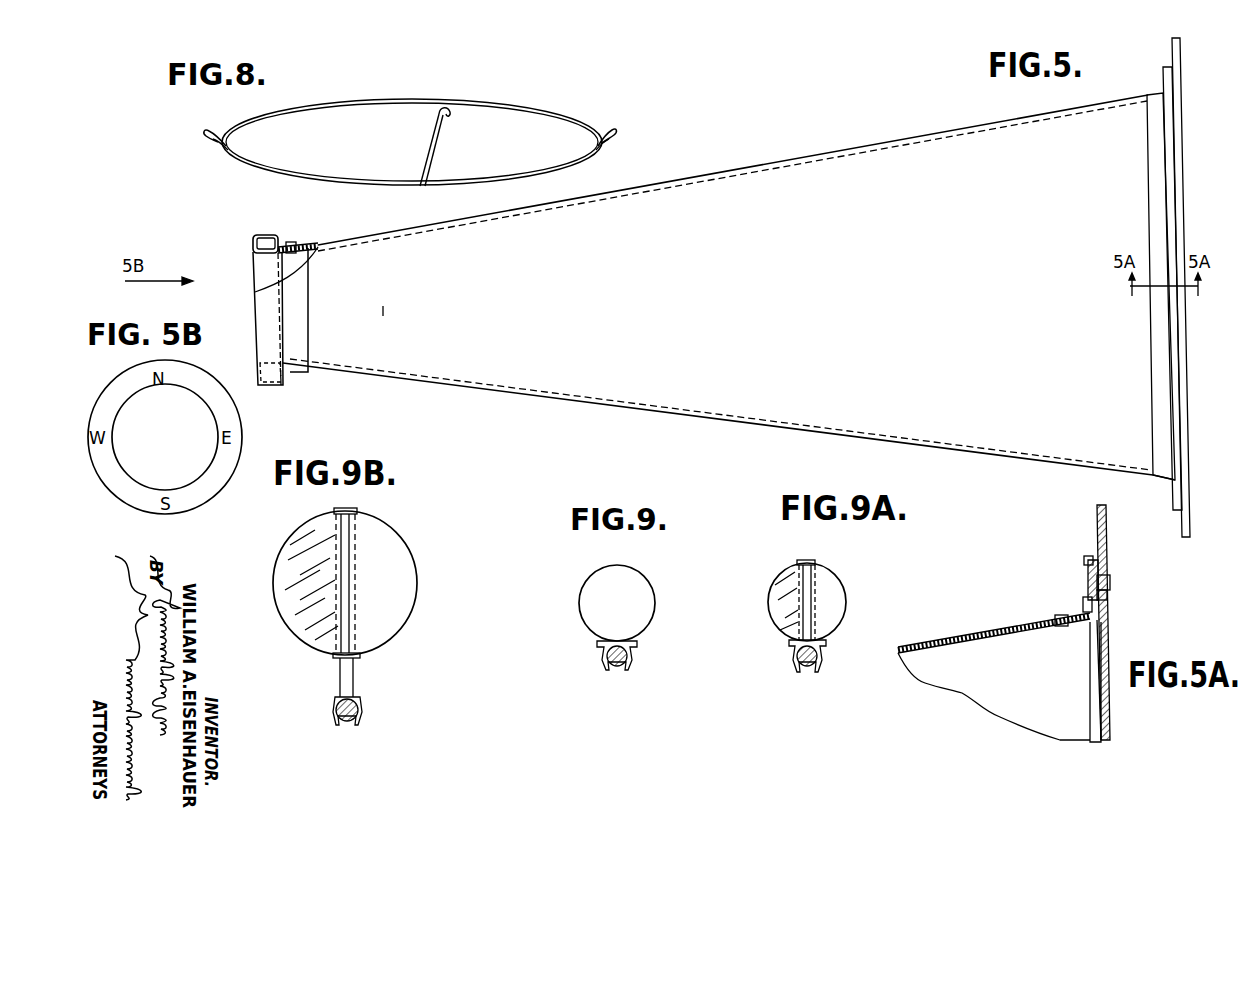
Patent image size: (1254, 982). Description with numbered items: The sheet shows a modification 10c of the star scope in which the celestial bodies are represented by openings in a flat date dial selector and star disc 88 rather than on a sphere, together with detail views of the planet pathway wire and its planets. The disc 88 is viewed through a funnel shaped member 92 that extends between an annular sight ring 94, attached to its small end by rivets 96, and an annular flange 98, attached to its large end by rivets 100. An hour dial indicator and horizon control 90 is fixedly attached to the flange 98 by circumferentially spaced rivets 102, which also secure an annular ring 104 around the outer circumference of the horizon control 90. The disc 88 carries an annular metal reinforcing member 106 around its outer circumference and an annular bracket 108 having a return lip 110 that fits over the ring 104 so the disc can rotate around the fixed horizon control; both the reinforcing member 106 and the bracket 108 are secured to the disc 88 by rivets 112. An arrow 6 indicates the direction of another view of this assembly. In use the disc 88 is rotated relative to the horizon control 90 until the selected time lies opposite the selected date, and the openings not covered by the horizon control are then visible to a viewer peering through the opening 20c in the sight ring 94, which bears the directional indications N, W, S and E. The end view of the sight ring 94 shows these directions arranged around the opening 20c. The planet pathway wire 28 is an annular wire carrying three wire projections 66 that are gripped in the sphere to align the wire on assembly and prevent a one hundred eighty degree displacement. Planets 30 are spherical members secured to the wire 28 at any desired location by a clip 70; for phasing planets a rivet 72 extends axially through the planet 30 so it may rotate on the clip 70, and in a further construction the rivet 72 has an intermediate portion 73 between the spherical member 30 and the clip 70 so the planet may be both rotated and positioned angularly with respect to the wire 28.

In FIG. 5, the viewing direction arrow 6 is at (1090, 356).
In FIG. 5, the modification of the star scope 10c is at (481, 402).
In FIG. 5, the opening in the sight ring 20c is at (258, 290).
In FIG. 8, the planet pathway wire 28 is at (372, 182).
In FIG. 9B, the planet pathway wire 28 is at (347, 725).
In FIG. 9, the planet pathway wire 28 is at (617, 671).
In FIG. 9A, the planet pathway wire 28 is at (807, 672).
In FIG. 9B, the planet 30 is at (418, 590).
In FIG. 9, the planet 30 is at (655, 598).
In FIG. 9A, the planet 30 is at (845, 595).
In FIG. 8, the wire projections 66 is at (217, 128).
In FIG. 9B, the clip 70 is at (362, 712).
In FIG. 9, the clip 70 is at (632, 653).
In FIG. 9A, the clip 70 is at (822, 653).
In FIG. 9B, the rivet 72 is at (350, 542).
In FIG. 9A, the rivet 72 is at (815, 582).
In FIG. 9B, the intermediate portion 73 is at (338, 683).
In FIG. 5A, the date dial selector and star disc 88 is at (1108, 642).
In FIG. 5A, the hour dial indicator and horizon control 90 is at (1090, 692).
In FIG. 5, the funnel shaped member 92 is at (593, 416).
In FIG. 5, the annular sight ring 94 is at (266, 235).
In FIG. 5, the rivets 96 is at (294, 242).
In FIG. 5, the annular flange 98 is at (1150, 92).
In FIG. 5A, the annular flange 98 is at (1040, 628).
In FIG. 5A, the rivets 100 is at (1060, 630).
In FIG. 5A, the rivets 102 is at (1085, 603).
In FIG. 5A, the annular ring 104 is at (1088, 580).
In FIG. 5, the annular metal reinforcing member 106 is at (1180, 126).
In FIG. 5A, the annular metal reinforcing member 106 is at (1107, 560).
In FIG. 5A, the annular bracket 108 is at (1109, 595).
In FIG. 5, the return lip 110 is at (1177, 497).
In FIG. 5A, the return lip 110 is at (1090, 555).
In FIG. 5A, the rivets 112 is at (1112, 582).